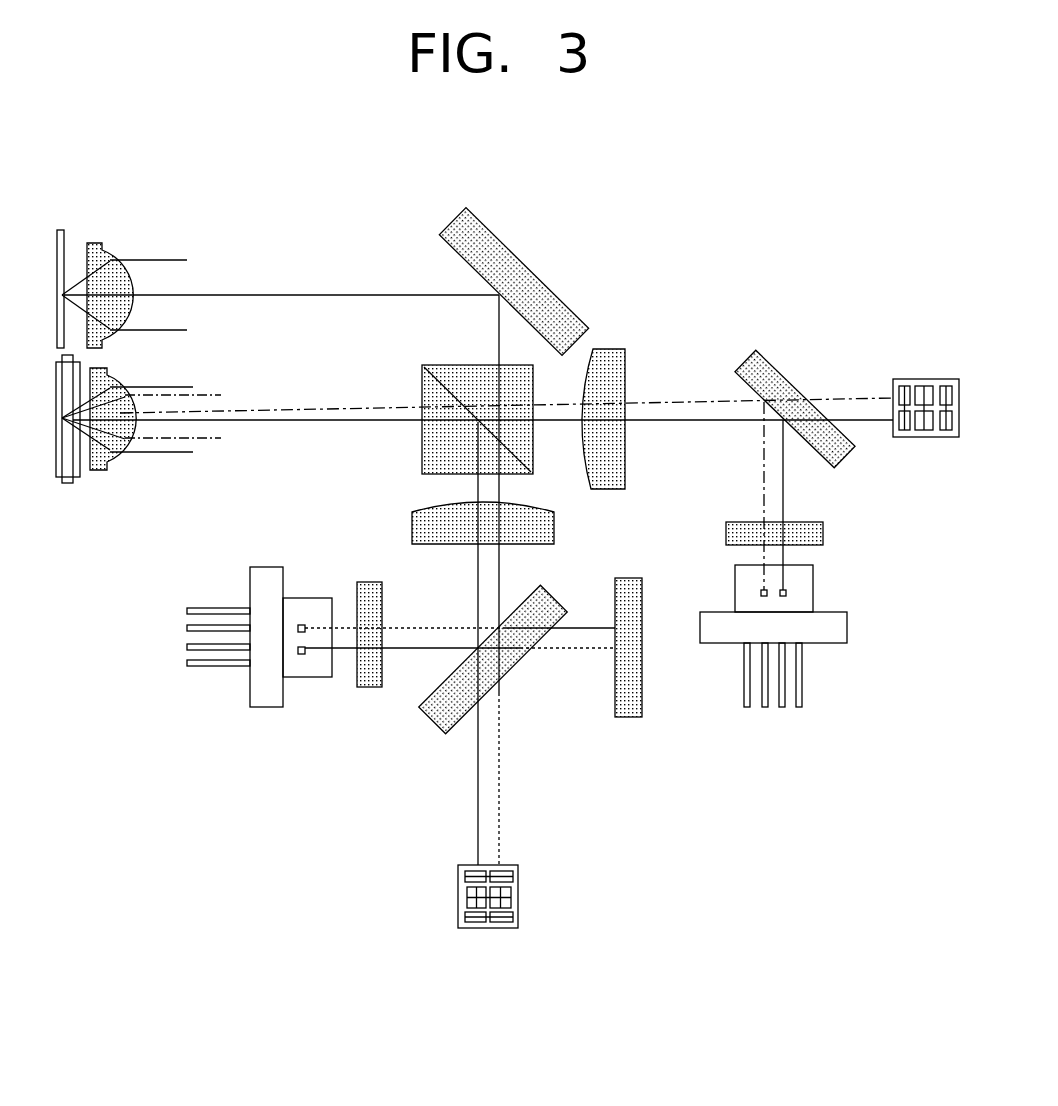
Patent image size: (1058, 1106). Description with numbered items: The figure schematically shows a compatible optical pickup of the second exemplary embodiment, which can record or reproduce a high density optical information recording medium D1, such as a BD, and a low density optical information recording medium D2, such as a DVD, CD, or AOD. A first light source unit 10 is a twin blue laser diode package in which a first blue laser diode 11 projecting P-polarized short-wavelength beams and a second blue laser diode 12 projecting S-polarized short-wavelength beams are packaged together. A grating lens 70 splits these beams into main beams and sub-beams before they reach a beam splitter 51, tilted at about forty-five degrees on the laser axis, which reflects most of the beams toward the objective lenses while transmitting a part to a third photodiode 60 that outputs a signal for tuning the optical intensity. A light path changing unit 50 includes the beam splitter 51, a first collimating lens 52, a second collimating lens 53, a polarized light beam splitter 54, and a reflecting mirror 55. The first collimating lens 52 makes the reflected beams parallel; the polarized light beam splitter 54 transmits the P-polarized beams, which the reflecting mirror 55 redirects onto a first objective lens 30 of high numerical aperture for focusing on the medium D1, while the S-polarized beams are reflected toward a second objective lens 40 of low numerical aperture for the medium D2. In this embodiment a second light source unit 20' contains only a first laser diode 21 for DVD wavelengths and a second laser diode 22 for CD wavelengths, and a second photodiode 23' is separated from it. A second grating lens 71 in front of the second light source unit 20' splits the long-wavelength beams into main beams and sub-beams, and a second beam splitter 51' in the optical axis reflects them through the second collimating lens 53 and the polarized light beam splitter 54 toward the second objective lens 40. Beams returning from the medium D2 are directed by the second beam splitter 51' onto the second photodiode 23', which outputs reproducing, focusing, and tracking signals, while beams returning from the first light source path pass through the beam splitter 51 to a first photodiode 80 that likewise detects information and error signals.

The high density optical information recording medium D1 is at (60, 228).
The low density optical information recording medium D2 is at (63, 484).
The first objective lens 30 is at (97, 243).
The second objective lens 40 is at (100, 472).
The light path changing unit 50 is at (611, 310).
The reflecting mirror 55 is at (467, 209).
The polarized light beam splitter 54 is at (422, 370).
The second collimating lens 53 is at (618, 352).
The first collimating lens 52 is at (415, 522).
The beam splitter 51 is at (489, 684).
The second beam splitter 51' is at (795, 445).
The second photodiode 23' is at (926, 381).
The second grating lens 71 is at (823, 532).
The first laser diode 21 is at (758, 589).
The second laser diode 22 is at (789, 589).
The second light source unit 20' is at (797, 653).
The first light source unit 10 is at (235, 708).
The first blue laser diode 11 is at (301, 622).
The second blue laser diode 12 is at (301, 657).
The grating lens 70 is at (370, 690).
The third photodiode 60 is at (622, 720).
The first photodiode 80 is at (511, 902).